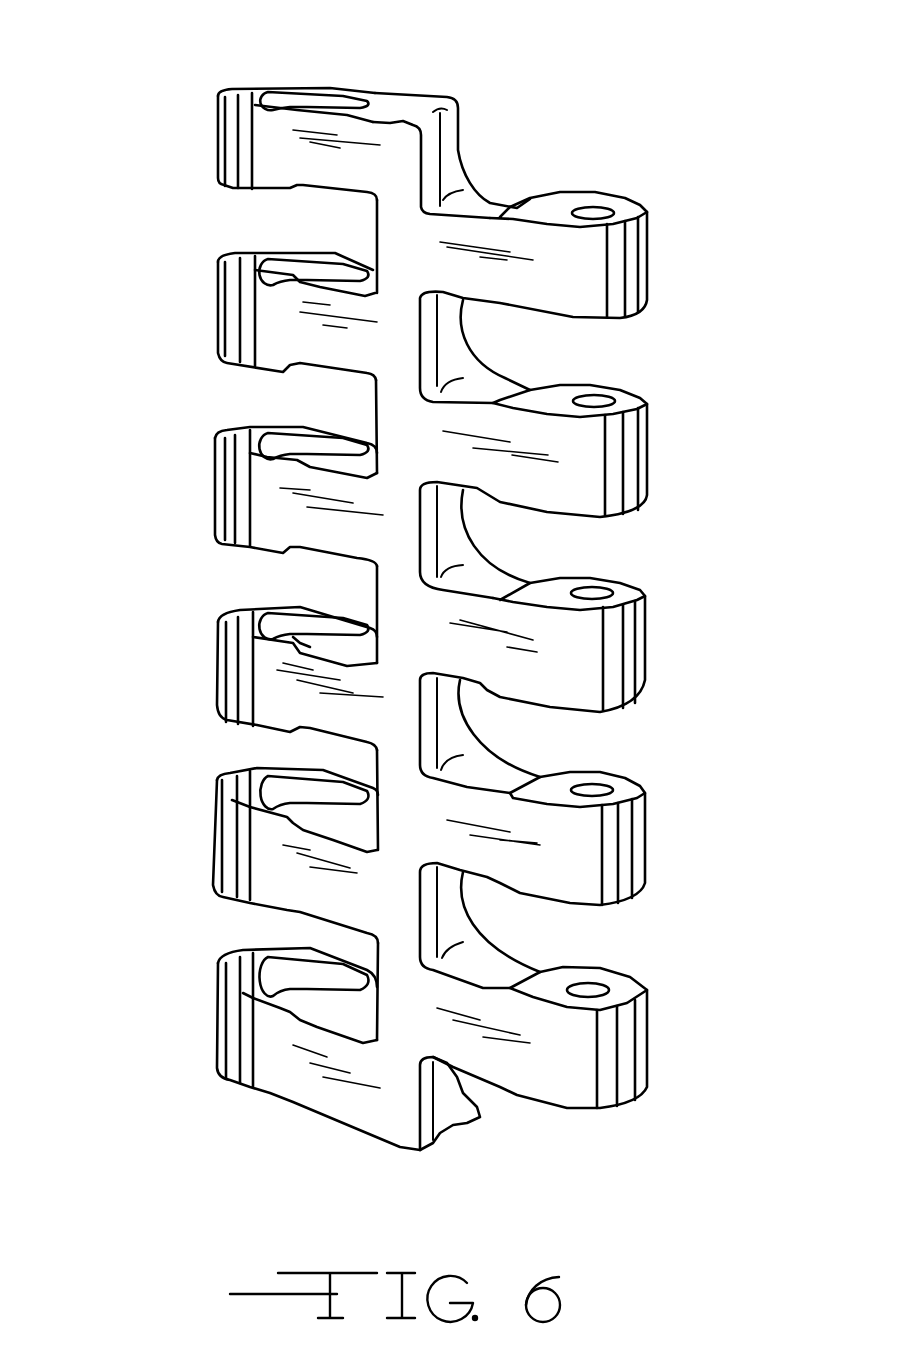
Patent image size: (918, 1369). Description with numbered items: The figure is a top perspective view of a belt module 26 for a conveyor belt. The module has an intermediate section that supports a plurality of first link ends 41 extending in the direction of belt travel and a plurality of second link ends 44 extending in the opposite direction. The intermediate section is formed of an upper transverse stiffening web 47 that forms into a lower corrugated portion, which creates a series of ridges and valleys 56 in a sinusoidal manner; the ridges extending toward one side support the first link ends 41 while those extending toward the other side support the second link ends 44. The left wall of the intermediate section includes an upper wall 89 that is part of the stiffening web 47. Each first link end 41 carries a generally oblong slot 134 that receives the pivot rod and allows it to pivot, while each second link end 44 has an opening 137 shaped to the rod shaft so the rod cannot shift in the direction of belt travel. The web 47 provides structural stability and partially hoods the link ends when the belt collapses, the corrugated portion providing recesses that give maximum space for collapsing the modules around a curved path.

The belt module 26 is at (440, 68).
The first link ends 41 is at (260, 493).
The second link ends 44 is at (582, 655).
The transverse stiffening web 47 is at (397, 535).
The valleys 56 is at (460, 327).
The upper wall 89 is at (433, 152).
The slot 134 is at (277, 790).
The openings 137 is at (603, 585).